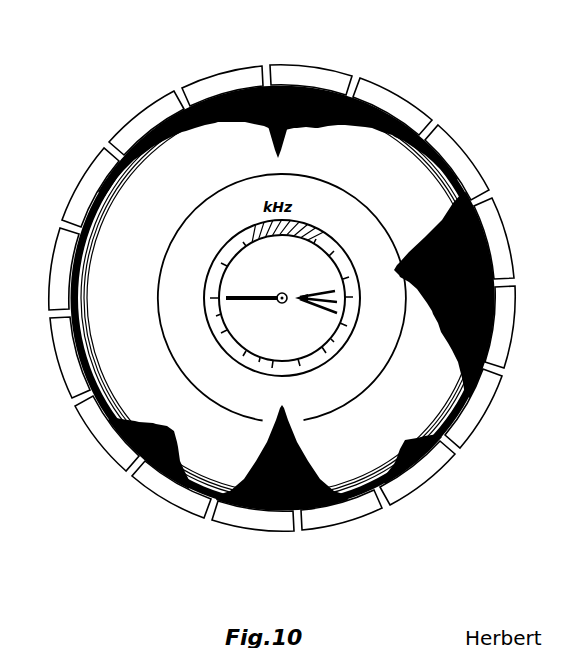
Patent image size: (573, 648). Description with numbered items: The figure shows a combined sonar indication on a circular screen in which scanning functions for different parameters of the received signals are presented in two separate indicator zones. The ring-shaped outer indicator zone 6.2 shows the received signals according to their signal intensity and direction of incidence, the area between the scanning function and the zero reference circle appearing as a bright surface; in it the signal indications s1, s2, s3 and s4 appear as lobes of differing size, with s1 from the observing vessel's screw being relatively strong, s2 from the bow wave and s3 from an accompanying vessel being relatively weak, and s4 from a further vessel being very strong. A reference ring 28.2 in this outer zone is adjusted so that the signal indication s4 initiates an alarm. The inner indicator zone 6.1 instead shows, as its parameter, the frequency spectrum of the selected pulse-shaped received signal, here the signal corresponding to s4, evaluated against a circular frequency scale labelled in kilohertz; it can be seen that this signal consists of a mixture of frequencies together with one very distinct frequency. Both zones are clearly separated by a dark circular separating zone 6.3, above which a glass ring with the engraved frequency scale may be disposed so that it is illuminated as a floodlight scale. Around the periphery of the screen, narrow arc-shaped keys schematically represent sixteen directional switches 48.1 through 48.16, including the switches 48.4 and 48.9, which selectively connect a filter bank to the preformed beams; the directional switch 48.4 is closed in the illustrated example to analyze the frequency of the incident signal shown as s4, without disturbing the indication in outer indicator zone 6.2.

The directional switch 48.1 is at (310, 77).
The directional switch 48.16 is at (232, 82).
The directional switch 48.4 is at (495, 253).
The directional switch 48.9 is at (225, 517).
The reference ring 28.2 is at (213, 187).
The inner indicator zone 6.1 is at (296, 298).
The outer indicator zone 6.2 is at (408, 188).
The separation zone 6.3 is at (360, 297).
The signal indication s1 is at (282, 487).
The signal indication s2 is at (330, 90).
The signal indication s3 is at (147, 463).
The signal indication s4 is at (480, 365).